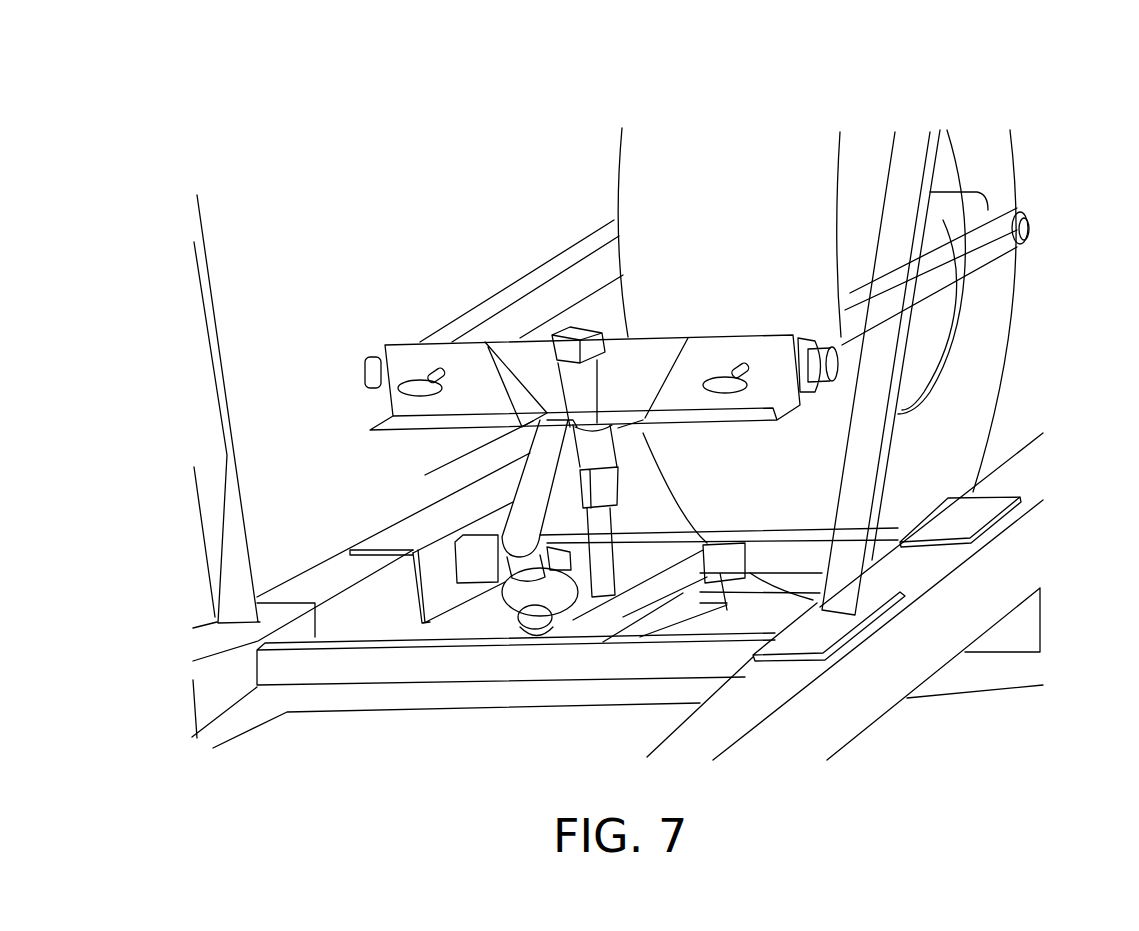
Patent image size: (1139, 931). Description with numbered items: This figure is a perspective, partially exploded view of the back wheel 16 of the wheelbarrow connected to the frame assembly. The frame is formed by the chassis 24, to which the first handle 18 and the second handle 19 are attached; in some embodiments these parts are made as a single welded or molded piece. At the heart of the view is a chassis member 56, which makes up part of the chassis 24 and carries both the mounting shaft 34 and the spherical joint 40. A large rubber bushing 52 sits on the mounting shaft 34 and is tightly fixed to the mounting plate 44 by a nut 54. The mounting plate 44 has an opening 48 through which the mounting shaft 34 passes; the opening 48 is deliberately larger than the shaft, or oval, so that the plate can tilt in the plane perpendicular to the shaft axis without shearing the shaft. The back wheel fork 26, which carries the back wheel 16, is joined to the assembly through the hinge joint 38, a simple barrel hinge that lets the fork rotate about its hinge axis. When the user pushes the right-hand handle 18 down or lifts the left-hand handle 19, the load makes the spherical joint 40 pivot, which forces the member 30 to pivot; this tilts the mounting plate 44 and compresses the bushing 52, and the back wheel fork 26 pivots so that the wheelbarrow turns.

The back wheel 16 is at (688, 245).
The first handle 18 is at (332, 565).
The second handle 19 is at (835, 707).
The chassis 24 is at (345, 328).
The back wheel fork 26 is at (965, 260).
The member 30 is at (530, 490).
The mounting shaft 34 is at (600, 548).
The hinge joint 38 is at (847, 362).
The spherical joint 40 is at (516, 597).
The mounting plate 44 is at (467, 400).
The opening 48 is at (615, 428).
The rubber bushing 52 is at (617, 440).
The nut 54 is at (600, 485).
The chassis member 56 is at (377, 667).